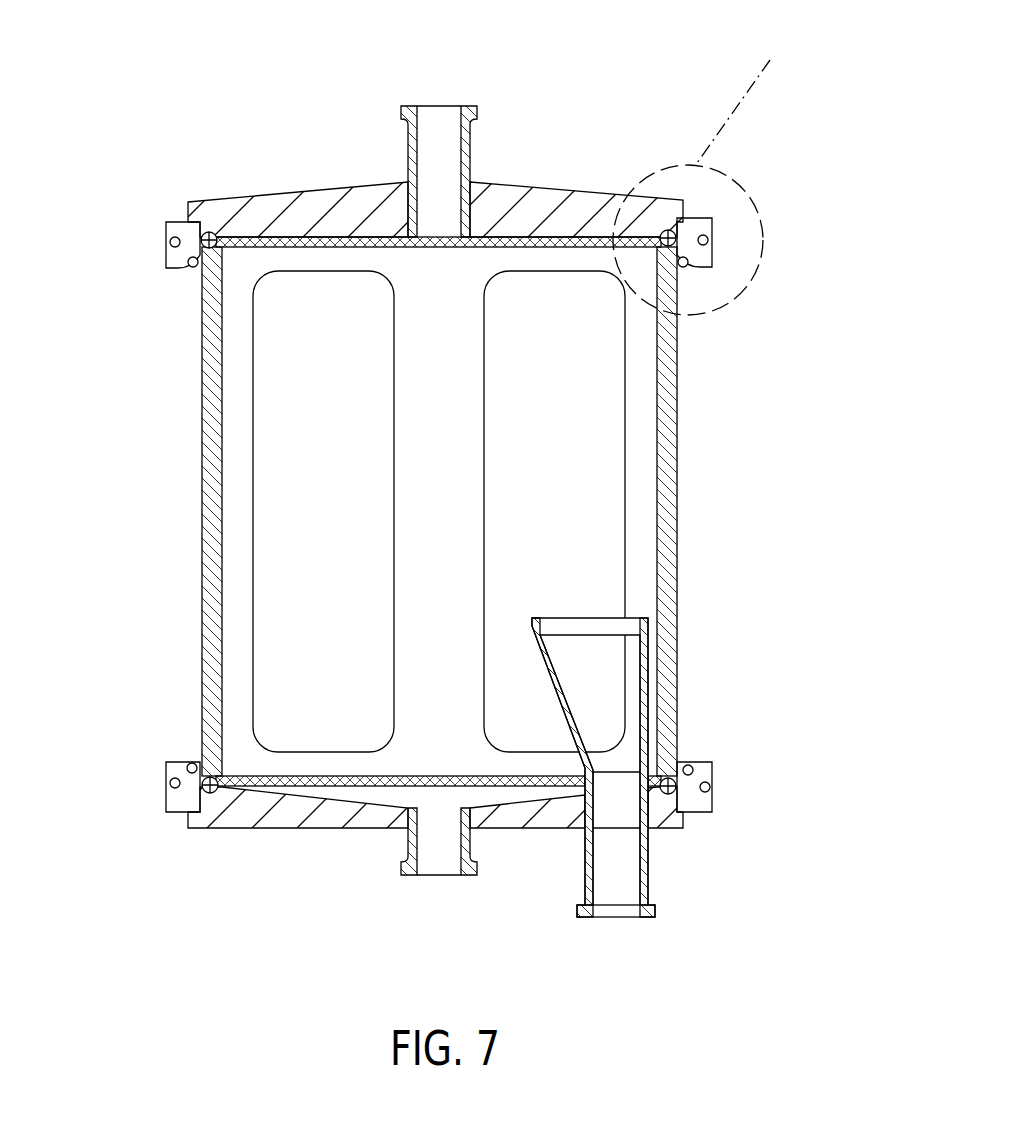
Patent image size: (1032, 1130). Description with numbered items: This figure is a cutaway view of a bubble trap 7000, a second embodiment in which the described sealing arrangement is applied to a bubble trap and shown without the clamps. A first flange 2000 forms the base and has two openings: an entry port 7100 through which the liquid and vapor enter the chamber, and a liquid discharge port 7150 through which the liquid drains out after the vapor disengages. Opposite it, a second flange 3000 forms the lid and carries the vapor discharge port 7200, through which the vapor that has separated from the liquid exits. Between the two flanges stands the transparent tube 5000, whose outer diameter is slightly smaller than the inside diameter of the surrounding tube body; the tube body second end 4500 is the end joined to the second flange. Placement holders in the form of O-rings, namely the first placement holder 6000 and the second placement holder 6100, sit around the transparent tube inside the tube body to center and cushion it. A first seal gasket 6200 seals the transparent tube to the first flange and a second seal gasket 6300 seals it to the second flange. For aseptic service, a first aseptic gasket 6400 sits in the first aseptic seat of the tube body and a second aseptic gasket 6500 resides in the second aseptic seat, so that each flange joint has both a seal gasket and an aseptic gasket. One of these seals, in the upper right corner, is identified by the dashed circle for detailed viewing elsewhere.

The bubble trap 7000 is at (473, 503).
The vapor discharge port 7200 is at (455, 88).
The second flange 3000 is at (578, 186).
The second seal gasket 6300 is at (210, 232).
The second aseptic gasket 6500 is at (171, 244).
The tube body second end 4500 is at (690, 262).
The second placement holder 6100 is at (193, 267).
The transparent tube 5000 is at (670, 490).
The first placement holder 6000 is at (191, 763).
The first seal gasket 6200 is at (207, 792).
The first aseptic gasket 6400 is at (174, 788).
The first flange 2000 is at (268, 832).
The entry port 7100 is at (405, 885).
The liquid discharge port 7150 is at (660, 917).